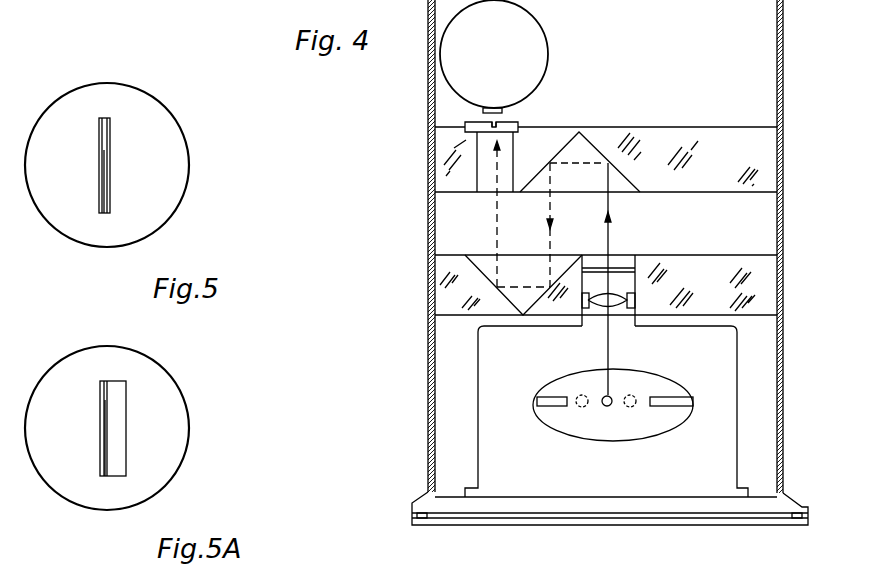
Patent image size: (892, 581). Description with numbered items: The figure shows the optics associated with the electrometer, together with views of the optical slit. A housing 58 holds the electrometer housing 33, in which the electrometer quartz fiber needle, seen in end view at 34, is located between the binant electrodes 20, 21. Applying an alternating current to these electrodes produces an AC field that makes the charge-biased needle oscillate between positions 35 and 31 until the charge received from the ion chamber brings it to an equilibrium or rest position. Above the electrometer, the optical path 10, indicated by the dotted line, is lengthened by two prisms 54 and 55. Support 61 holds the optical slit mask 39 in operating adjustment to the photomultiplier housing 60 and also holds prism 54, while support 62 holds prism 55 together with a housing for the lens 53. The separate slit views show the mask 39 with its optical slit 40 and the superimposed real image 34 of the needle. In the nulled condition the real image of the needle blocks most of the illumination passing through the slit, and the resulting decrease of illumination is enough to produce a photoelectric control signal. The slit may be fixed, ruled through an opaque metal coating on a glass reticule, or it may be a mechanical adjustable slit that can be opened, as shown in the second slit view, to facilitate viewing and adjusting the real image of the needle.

In FIG. 4, the optical path 10 is at (615, 235).
In FIG. 4, the binant electrode 20 is at (670, 402).
In FIG. 4, the binant electrode 21 is at (560, 400).
In FIG. 4, the needle position 31 is at (578, 395).
In FIG. 4, the electrometer housing 33 is at (723, 425).
In FIG. 5, the electrometer needle end view / real image of needle 34 is at (104, 213).
In FIG. 5A, the electrometer needle end view / real image of needle 34 is at (107, 460).
In FIG. 4, the electrometer needle end view / real image of needle 34 is at (605, 406).
In FIG. 4, the needle position 35 is at (634, 406).
In FIG. 5, the optical slit mask 39 is at (172, 134).
In FIG. 5A, the optical slit mask 39 is at (168, 393).
In FIG. 4, the optical slit mask 39 is at (510, 122).
In FIG. 5, the optical slit 40 is at (110, 118).
In FIG. 5A, the optical slit 40 is at (120, 390).
In FIG. 4, the optical slit 40 is at (492, 124).
In FIG. 4, the lens 53 is at (612, 312).
In FIG. 4, the prism 54 is at (590, 153).
In FIG. 4, the prism 55 is at (488, 270).
In FIG. 4, the housing 58 is at (428, 219).
In FIG. 4, the photomultiplier housing 60 is at (538, 43).
In FIG. 4, the support 61 is at (677, 133).
In FIG. 4, the support 62 is at (683, 270).